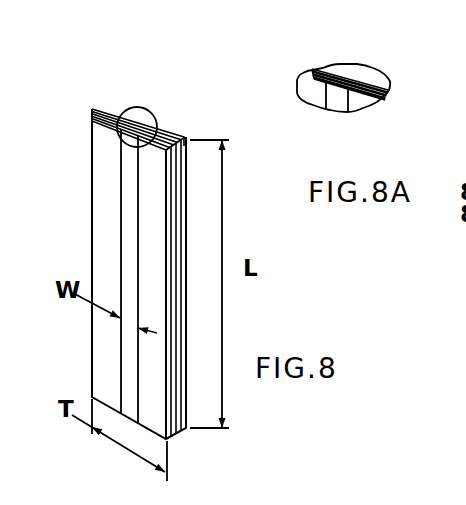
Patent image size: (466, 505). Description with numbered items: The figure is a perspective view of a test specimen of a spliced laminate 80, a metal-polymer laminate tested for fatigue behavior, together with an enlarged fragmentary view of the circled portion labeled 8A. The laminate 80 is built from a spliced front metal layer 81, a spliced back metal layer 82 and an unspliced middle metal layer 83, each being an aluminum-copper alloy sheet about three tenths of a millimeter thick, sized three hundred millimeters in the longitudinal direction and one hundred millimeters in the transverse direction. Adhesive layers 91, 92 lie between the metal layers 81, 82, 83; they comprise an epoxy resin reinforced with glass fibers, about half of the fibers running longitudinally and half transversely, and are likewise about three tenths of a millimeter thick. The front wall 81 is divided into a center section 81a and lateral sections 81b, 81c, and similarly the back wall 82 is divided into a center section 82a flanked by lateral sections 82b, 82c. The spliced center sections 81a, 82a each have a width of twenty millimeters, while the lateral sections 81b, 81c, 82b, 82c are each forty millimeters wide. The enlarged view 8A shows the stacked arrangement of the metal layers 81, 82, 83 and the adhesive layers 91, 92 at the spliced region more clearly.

In FIG. 8, the spliced laminate 80 is at (118, 90).
In FIG. 8, the spliced front metal layer 81 is at (92, 148).
In FIG. 8, the center section 81a is at (127, 195).
In FIG. 8A, the center section 81a is at (337, 108).
In FIG. 8, the lateral section 81b is at (100, 212).
In FIG. 8A, the lateral section 81b is at (308, 90).
In FIG. 8, the lateral section 81c is at (145, 260).
In FIG. 8A, the lateral section 81c is at (360, 110).
In FIG. 8, the spliced back metal layer 82 is at (122, 107).
In FIG. 8A, the center section 82a is at (363, 75).
In FIG. 8A, the lateral section 82b is at (340, 68).
In FIG. 8A, the lateral section 82c is at (388, 87).
In FIG. 8A, the unspliced middle metal layer 83 is at (387, 98).
In FIG. 8A, the adhesive layer 91 is at (317, 67).
In FIG. 8A, the adhesive layer 92 is at (327, 65).
In FIG. 8, the detail circle 8A is at (143, 107).